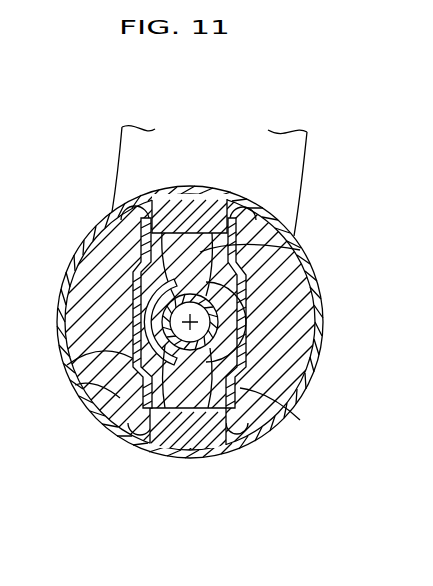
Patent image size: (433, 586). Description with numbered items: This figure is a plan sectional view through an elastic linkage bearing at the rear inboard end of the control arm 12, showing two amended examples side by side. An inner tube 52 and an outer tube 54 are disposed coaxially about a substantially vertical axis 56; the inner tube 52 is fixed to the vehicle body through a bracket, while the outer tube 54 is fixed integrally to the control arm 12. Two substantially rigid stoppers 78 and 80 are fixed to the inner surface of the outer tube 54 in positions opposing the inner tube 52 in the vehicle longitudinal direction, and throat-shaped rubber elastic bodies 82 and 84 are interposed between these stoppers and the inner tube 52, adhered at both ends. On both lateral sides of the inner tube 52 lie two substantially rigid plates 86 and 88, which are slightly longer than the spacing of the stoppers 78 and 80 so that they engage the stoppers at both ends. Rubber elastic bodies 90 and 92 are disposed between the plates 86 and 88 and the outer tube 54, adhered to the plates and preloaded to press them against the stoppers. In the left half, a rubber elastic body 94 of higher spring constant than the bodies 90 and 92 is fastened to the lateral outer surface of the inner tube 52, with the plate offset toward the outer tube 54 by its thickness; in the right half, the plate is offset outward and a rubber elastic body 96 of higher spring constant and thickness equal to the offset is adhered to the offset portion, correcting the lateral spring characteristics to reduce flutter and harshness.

The control arm 12 is at (308, 168).
The inner tube 52 is at (248, 287).
The outer tube 54 is at (117, 171).
The axis 56 is at (190, 322).
The stopper 78 is at (215, 210).
The stopper 80 is at (218, 433).
The throat-shaped rubber elastic body 82 is at (274, 248).
The throat-shaped rubber elastic body 84 is at (240, 410).
The plate 86 is at (255, 392).
The plate 88 is at (93, 397).
The rubber elastic body 90 is at (290, 365).
The rubber elastic body 92 is at (80, 304).
The rubber elastic body 94 is at (75, 360).
The rubber elastic body 96 is at (234, 311).